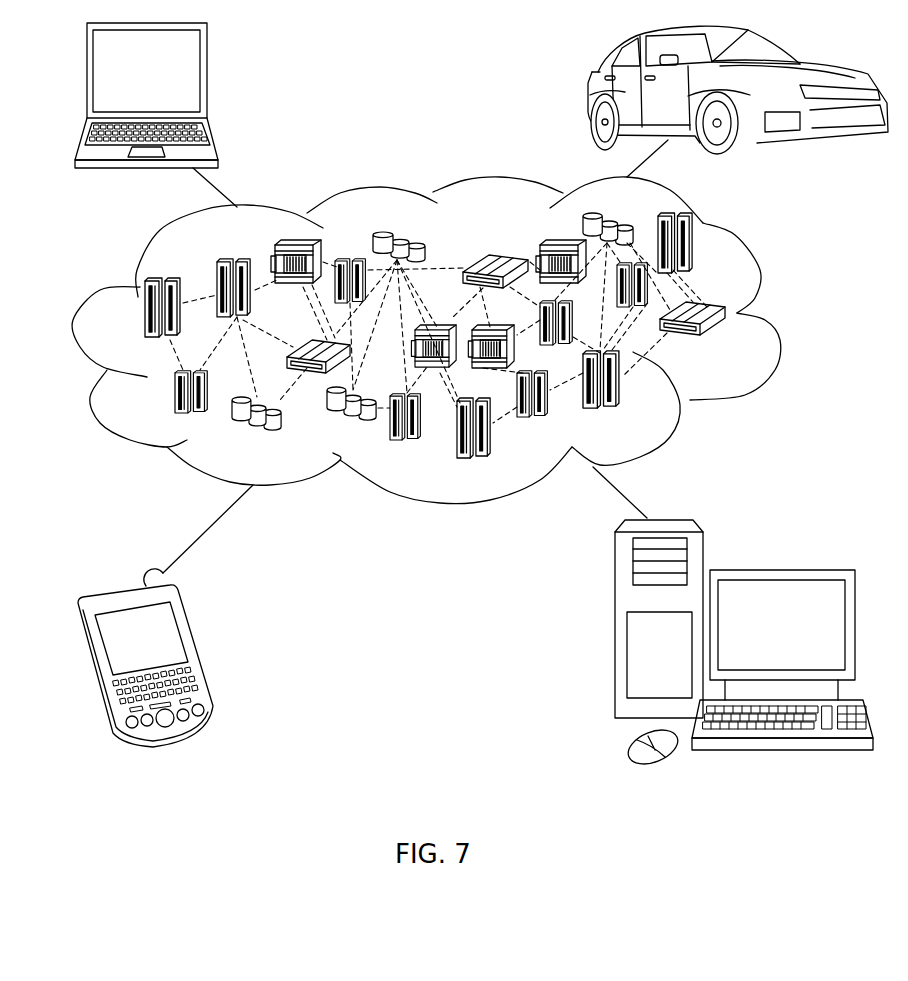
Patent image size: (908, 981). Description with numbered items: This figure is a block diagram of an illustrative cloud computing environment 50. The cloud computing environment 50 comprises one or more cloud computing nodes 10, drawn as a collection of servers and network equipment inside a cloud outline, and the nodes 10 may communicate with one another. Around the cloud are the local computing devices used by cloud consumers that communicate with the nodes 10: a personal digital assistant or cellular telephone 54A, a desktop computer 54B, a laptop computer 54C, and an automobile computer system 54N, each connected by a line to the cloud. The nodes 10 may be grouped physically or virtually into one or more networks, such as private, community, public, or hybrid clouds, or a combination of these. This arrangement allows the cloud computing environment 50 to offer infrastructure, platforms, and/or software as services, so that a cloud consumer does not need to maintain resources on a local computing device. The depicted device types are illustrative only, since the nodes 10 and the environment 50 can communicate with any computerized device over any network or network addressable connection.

The cloud computing node 10 is at (740, 346).
The cloud computing environment 50 is at (777, 317).
The personal digital assistant (PDA) or cellular telephone 54A is at (198, 650).
The desktop computer 54B is at (780, 568).
The laptop computer 54C is at (207, 78).
The automobile computer system 54N is at (590, 93).